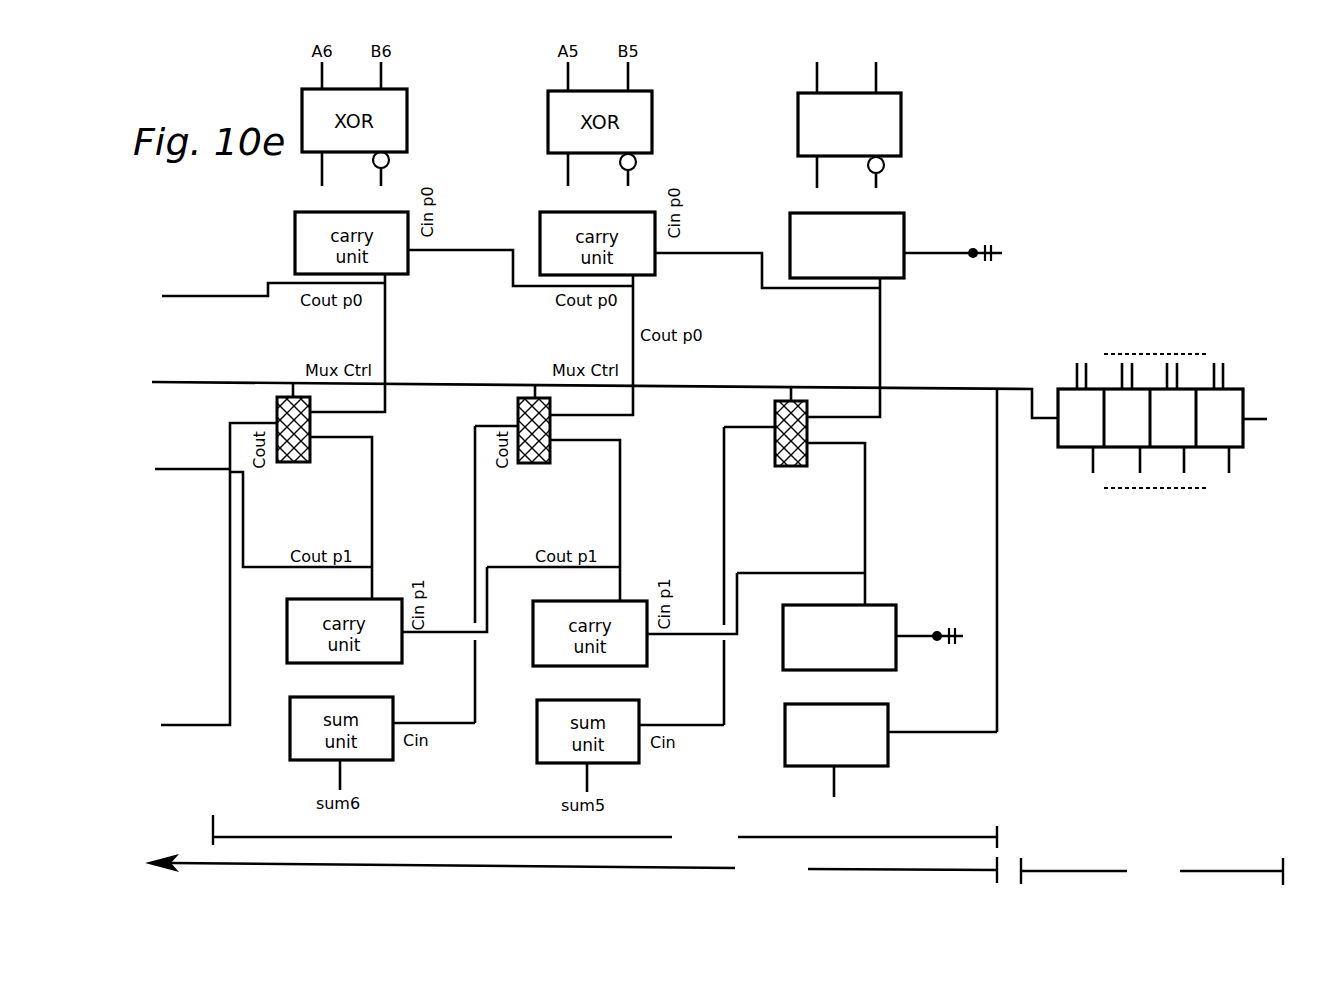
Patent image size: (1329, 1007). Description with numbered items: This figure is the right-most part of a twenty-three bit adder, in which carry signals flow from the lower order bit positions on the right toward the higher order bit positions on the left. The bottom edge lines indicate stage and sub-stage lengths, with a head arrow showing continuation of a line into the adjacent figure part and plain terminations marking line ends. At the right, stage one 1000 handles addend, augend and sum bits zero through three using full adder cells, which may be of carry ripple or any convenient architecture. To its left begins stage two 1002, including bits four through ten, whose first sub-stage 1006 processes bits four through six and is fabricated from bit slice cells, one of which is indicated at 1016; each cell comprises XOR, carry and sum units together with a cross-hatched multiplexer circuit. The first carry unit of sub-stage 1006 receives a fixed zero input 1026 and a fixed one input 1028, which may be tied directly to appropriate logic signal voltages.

The bit slice cell 1016 is at (986, 69).
The fixed zero input 1026 is at (942, 253).
The fixed one input 1028 is at (908, 636).
The sub-stage 1006 is at (605, 831).
The stage two 1002 is at (571, 868).
The stage one 1000 is at (1155, 615).